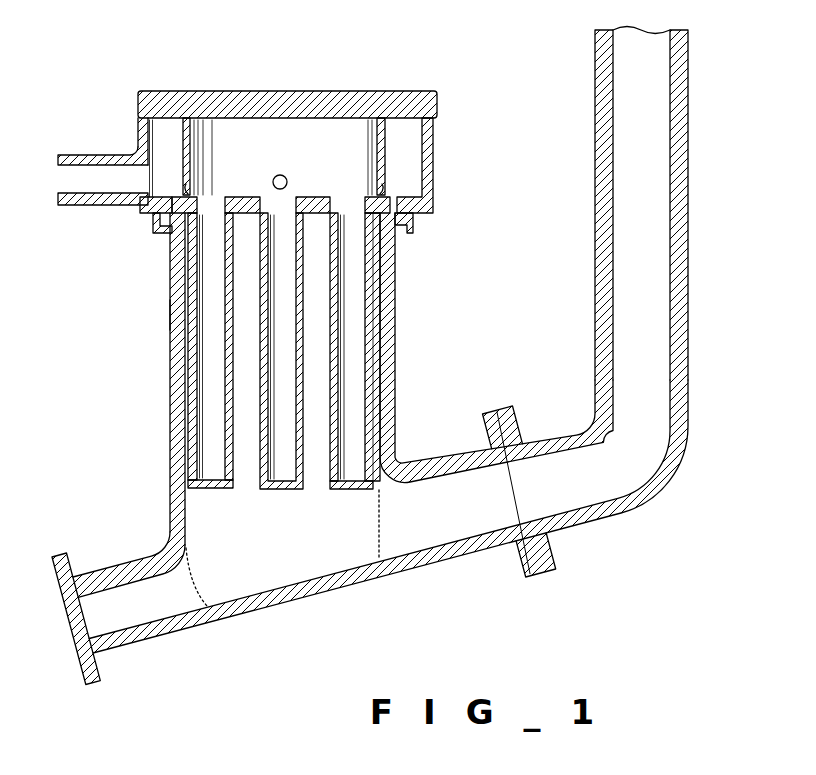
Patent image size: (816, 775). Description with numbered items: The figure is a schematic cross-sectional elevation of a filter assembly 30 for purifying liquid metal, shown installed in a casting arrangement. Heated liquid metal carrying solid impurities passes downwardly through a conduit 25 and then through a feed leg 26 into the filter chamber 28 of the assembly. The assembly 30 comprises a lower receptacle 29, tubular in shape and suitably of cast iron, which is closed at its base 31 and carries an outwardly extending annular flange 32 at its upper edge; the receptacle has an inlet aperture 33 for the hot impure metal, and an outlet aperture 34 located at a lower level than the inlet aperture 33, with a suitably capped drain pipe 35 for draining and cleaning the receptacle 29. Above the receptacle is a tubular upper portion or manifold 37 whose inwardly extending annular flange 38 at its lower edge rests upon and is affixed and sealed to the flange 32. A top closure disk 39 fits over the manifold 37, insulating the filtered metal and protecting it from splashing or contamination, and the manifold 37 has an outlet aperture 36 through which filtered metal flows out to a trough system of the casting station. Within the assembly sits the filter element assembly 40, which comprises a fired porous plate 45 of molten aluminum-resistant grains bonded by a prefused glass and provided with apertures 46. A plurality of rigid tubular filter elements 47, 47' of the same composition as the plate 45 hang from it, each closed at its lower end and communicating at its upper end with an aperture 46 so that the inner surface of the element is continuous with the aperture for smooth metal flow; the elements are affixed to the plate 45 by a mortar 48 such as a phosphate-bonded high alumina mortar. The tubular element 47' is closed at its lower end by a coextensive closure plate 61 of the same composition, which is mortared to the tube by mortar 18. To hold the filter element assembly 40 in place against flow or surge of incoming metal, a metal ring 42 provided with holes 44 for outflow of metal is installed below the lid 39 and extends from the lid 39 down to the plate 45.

The mortar 18 is at (207, 477).
The conduit 25 is at (681, 144).
The feed leg 26 is at (496, 548).
The filter chamber 28 is at (278, 541).
The lower receptacle 29 is at (393, 351).
The filter assembly 30 is at (150, 313).
The base 31 is at (270, 610).
The annular flange 32 is at (158, 237).
The inlet aperture 33 is at (393, 520).
The outlet aperture 34 is at (178, 590).
The drain pipe 35 is at (118, 570).
The outlet aperture 36 is at (77, 177).
The manifold 37 is at (139, 142).
The annular flange 38 is at (150, 214).
The top closure disk 39 is at (288, 92).
The filter element assembly 40 is at (395, 190).
The metal ring 42 is at (193, 137).
The holes 44 is at (186, 182).
The plate 45 is at (322, 212).
The apertures 46 is at (272, 197).
The tubular filter elements 47 is at (351, 378).
The tubular filter element 47' is at (139, 346).
The mortar 48 is at (178, 261).
The closure plate 61 is at (213, 491).